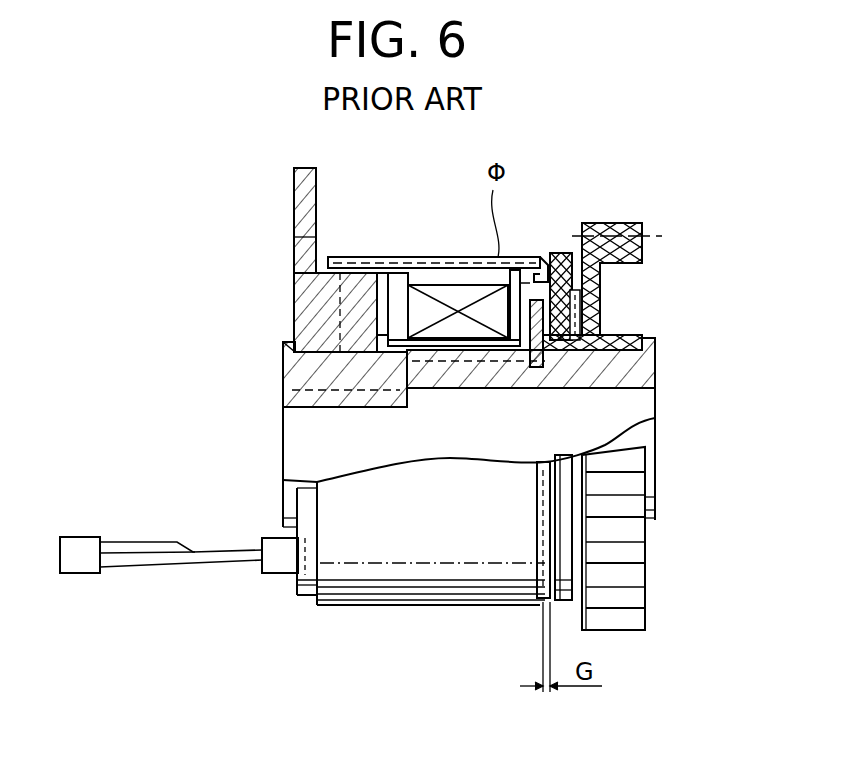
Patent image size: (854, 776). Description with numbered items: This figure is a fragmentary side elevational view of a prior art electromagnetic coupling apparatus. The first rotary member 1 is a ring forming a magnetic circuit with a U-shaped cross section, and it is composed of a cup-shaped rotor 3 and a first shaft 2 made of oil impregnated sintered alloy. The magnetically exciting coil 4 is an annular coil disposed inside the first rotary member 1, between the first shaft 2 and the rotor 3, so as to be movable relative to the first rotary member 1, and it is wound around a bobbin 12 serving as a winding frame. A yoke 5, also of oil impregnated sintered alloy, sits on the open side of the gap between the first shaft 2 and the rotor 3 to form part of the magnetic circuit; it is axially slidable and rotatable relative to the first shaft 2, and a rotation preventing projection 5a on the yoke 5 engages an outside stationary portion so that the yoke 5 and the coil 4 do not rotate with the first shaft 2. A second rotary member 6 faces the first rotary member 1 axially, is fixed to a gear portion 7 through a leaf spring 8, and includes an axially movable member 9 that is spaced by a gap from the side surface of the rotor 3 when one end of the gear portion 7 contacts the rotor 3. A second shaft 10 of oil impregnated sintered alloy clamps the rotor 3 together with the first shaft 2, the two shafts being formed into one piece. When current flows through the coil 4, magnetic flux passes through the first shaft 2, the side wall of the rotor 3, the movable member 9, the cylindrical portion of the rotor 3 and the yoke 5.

The first rotary member 1 is at (302, 376).
The first shaft 2 is at (288, 347).
The rotor 3 is at (365, 257).
The magnetically exciting coil 4 is at (449, 286).
The yoke 5 is at (312, 292).
The rotation preventing projection 5a is at (300, 198).
The second rotary member 6 is at (618, 336).
The gear portion 7 is at (612, 228).
The leaf spring 8 is at (572, 262).
The movable member 9 is at (558, 253).
The second shaft 10 is at (625, 368).
The bobbin 12 is at (396, 280).